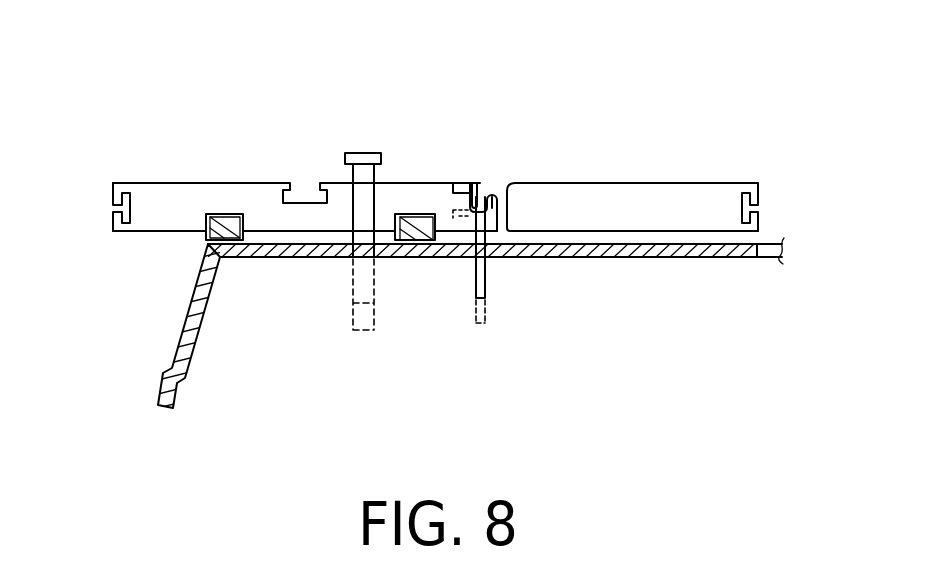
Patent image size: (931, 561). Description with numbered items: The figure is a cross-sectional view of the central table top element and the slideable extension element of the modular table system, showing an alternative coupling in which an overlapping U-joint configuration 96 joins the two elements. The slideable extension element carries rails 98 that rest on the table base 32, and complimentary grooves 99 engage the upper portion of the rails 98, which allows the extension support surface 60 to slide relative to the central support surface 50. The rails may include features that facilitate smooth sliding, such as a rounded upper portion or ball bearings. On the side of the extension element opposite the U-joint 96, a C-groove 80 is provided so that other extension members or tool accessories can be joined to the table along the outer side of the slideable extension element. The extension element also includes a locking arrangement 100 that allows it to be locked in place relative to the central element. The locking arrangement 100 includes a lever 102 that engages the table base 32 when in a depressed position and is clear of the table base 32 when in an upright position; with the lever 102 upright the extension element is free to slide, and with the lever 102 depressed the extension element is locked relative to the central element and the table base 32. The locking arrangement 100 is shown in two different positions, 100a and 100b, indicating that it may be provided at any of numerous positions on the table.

The table base 32 is at (183, 346).
The central support surface 50 is at (604, 173).
The extension support surface 60 is at (239, 172).
The C-groove 80 is at (116, 208).
The overlapping U-joint configuration 96 is at (515, 187).
The rails 98 is at (228, 232).
The complimentary grooves 99 is at (206, 237).
The locking arrangement 100 is at (351, 247).
The locking arrangement position 100a is at (400, 138).
The locking arrangement position 100b is at (505, 341).
The lever 102 is at (363, 157).